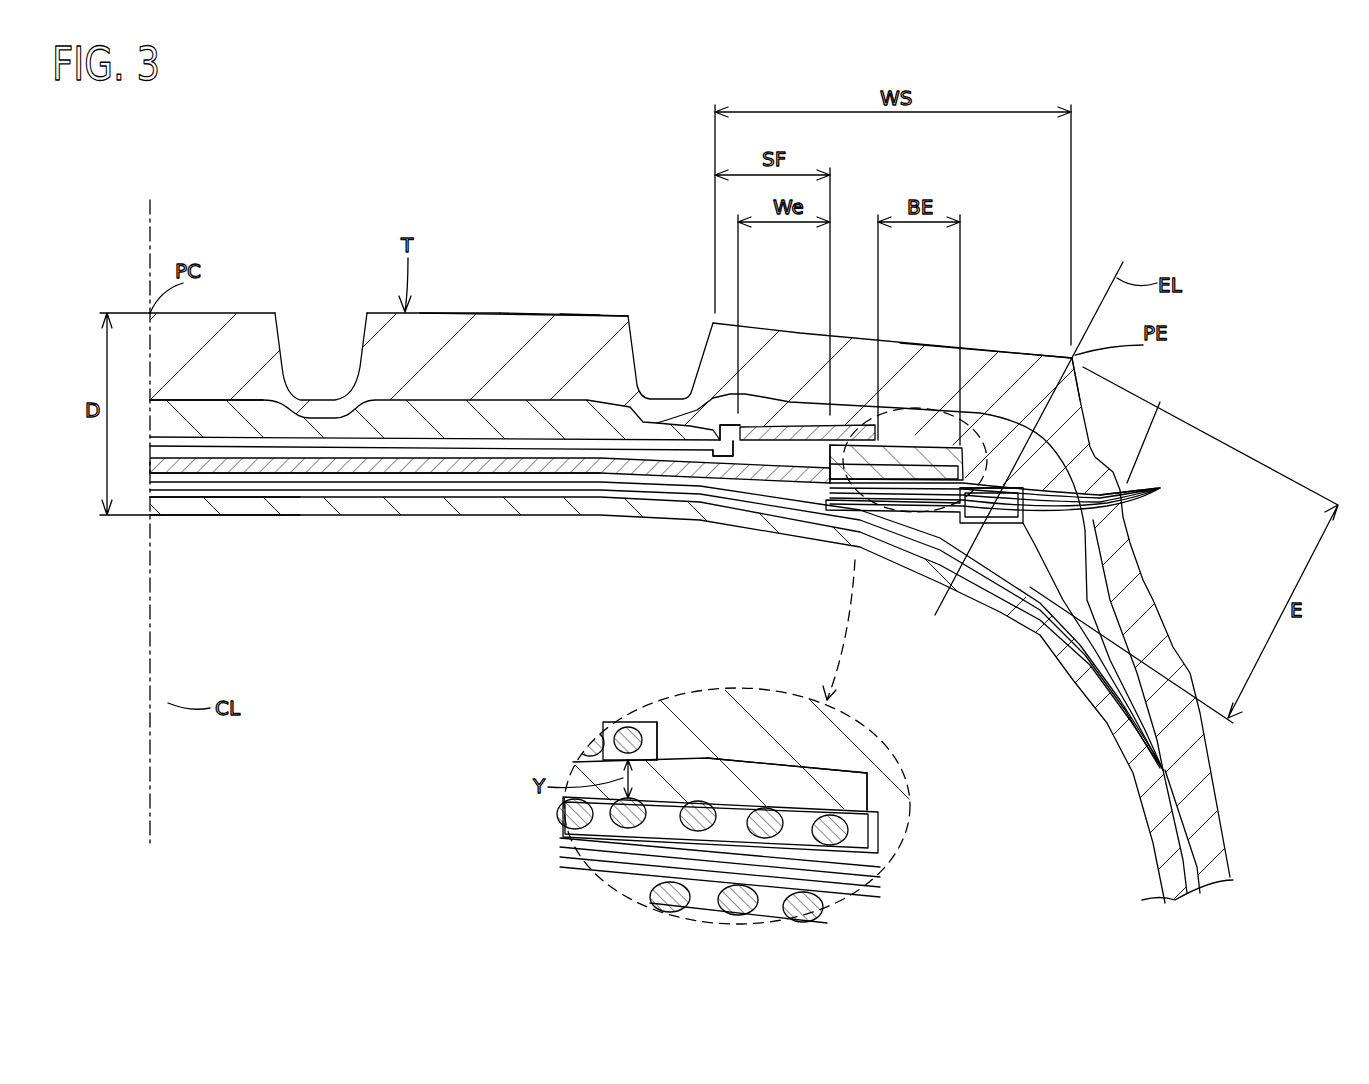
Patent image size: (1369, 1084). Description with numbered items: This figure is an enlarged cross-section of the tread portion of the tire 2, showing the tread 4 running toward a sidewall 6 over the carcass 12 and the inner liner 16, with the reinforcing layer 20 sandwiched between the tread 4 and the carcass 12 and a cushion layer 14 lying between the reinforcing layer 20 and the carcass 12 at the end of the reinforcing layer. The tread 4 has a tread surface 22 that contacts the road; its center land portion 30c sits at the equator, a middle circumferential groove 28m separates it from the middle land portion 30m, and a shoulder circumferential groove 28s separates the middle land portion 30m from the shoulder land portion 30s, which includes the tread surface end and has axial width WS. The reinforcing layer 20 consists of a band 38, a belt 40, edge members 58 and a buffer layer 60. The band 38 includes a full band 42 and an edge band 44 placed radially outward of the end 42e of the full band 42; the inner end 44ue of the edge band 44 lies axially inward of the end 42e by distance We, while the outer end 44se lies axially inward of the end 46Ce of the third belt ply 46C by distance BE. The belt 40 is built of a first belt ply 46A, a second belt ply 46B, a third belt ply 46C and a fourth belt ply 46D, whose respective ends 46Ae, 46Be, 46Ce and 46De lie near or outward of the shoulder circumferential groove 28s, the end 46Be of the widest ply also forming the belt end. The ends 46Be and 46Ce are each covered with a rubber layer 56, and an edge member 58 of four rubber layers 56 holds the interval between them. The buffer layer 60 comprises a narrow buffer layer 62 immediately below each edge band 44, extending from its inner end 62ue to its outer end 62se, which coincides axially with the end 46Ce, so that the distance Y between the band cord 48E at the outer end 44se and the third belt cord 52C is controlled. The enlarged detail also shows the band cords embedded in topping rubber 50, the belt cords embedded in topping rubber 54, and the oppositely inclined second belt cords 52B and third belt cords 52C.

The tire 2 is at (1252, 264).
The tread 4 is at (473, 296).
The sidewall 6 is at (1202, 768).
The carcass 12 is at (748, 518).
The cushion layer 14 is at (1050, 578).
The inner liner 16 is at (1124, 790).
The reinforcing layer 20 is at (183, 512).
The tread surface 22 is at (573, 315).
The middle circumferential groove 28m is at (293, 330).
The shoulder circumferential groove 28s is at (650, 345).
The center land portion 30c is at (222, 313).
The middle land portion 30m is at (512, 313).
The shoulder land portion 30s is at (996, 355).
The band 38 is at (640, 492).
The belt 40 is at (233, 512).
The full band 42 is at (583, 470).
The end of full band 42e is at (832, 485).
The edge band 44 is at (793, 437).
The inner end of edge band 44ue is at (719, 426).
The outer end of edge band 44se is at (657, 735).
The first belt ply 46A is at (290, 490).
The second belt ply 46B is at (357, 480).
The third belt ply 46C is at (425, 458).
The fourth belt ply 46D is at (495, 440).
The end of first belt ply 46Ae is at (960, 520).
The end of second belt ply 46Be is at (1125, 537).
The end of third belt ply 46Ce is at (882, 858).
The end of fourth belt ply 46De is at (762, 428).
The band cord 48E is at (623, 717).
The topping rubber 50 is at (600, 737).
The second belt cord 52B is at (670, 903).
The third belt cord 52C is at (628, 822).
The topping rubber 54 is at (733, 812).
The rubber layer 56 is at (1152, 489).
The edge member 58 is at (993, 478).
The buffer layer 60 is at (903, 444).
The narrow buffer layer 62 is at (927, 447).
The upper end of electrode pad 62ue is at (710, 452).
The outer end of narrow buffer layer 62se is at (880, 790).